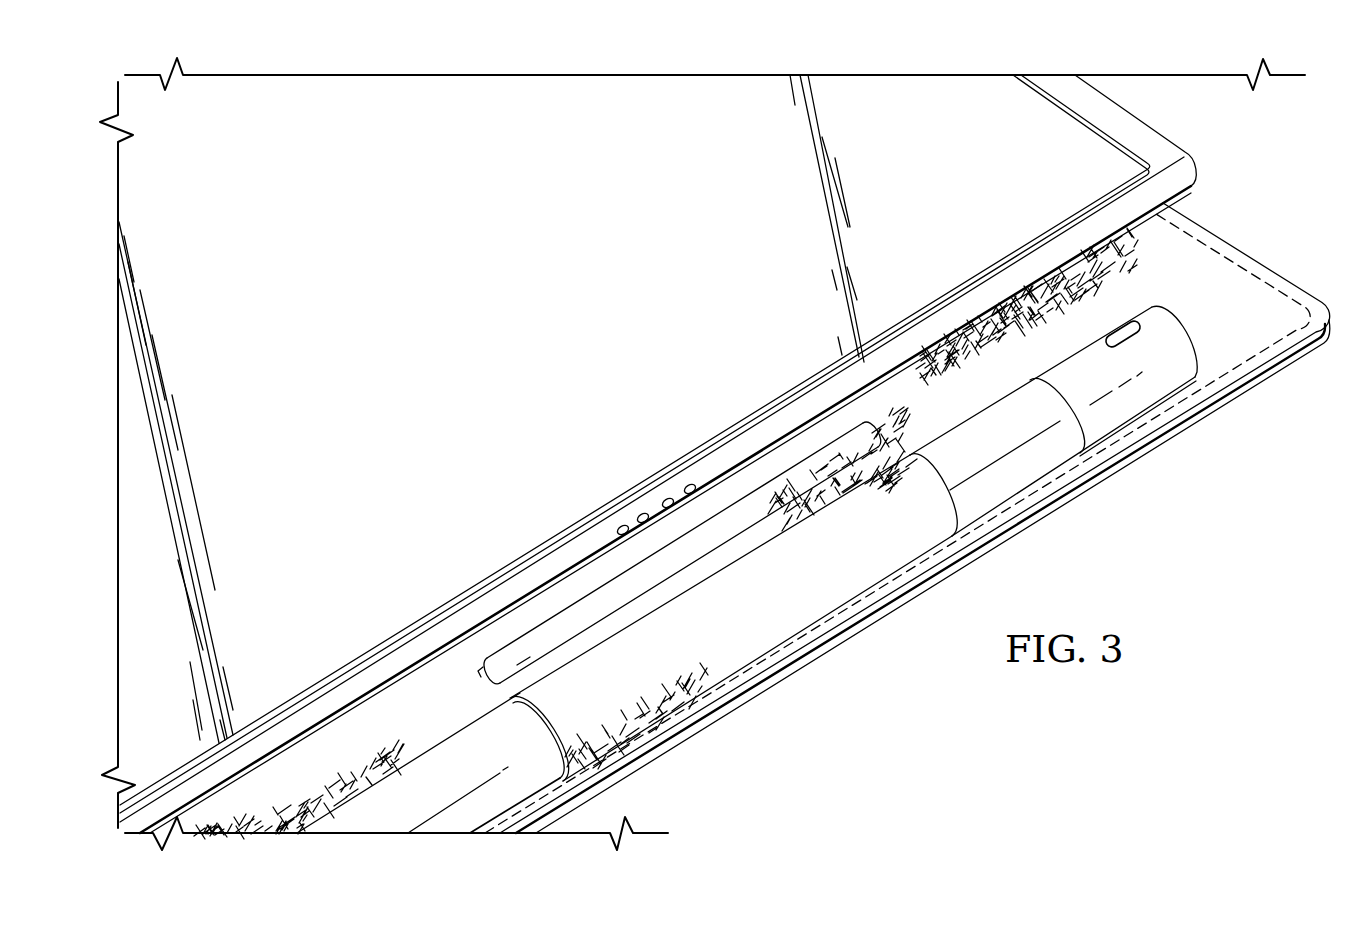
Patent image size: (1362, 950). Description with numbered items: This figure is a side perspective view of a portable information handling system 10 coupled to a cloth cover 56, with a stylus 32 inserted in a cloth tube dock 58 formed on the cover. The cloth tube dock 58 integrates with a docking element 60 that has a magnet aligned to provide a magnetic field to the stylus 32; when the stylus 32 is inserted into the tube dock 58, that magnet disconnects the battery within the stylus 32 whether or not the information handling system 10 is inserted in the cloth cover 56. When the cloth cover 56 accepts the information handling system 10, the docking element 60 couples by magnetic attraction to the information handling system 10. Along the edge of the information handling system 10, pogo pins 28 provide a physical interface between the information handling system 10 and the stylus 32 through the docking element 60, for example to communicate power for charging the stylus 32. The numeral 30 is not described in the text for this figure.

The portable information handling system 10 is at (685, 454).
The pogo pins 28 is at (688, 487).
The side edge of electronic device 30 is at (655, 495).
The stylus 32 is at (1168, 342).
The cloth cover 56 is at (1272, 308).
The cloth tube dock 58 is at (772, 632).
The docking element 60 is at (876, 436).